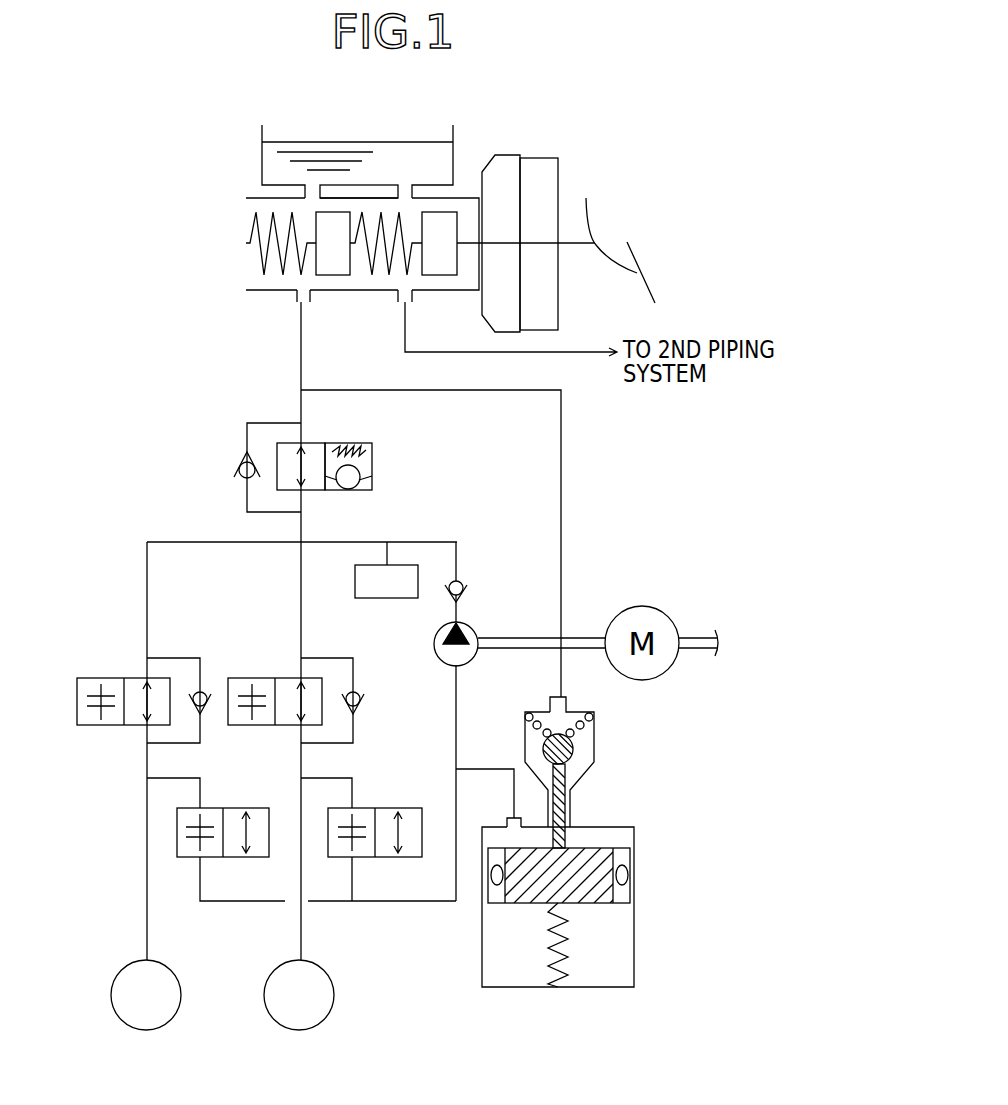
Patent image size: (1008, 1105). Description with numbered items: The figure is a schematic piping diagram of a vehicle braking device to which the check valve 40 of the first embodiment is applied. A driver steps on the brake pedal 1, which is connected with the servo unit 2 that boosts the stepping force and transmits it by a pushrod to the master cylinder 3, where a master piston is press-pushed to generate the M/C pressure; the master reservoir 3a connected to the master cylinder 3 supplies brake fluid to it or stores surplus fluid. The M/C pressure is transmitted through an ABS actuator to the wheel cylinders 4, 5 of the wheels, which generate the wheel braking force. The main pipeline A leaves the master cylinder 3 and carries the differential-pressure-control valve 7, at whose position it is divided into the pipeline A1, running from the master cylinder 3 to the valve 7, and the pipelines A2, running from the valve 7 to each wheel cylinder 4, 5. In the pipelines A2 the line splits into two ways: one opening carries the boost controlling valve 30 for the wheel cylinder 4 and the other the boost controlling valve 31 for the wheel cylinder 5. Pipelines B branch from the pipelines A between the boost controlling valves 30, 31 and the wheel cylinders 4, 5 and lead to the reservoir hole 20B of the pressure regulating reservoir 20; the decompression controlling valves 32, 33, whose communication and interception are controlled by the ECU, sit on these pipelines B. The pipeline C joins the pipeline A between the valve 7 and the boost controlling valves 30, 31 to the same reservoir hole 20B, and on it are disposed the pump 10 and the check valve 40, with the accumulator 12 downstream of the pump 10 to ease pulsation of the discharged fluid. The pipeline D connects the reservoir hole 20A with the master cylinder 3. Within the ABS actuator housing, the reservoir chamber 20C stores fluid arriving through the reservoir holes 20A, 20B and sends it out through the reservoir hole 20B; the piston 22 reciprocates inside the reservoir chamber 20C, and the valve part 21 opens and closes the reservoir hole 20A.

The brake pedal 1 is at (590, 205).
The servo unit 2 is at (540, 158).
The master cylinder 3 is at (236, 266).
The master reservoir 3a is at (348, 142).
The wheel cylinder 4 is at (111, 995).
The wheel cylinder 5 is at (264, 995).
The differential-pressure-control valve 7 is at (372, 465).
The pump 10 is at (474, 622).
The accumulator 12 is at (355, 581).
The pressure regulating reservoir 20 is at (583, 860).
The reservoir hole 20A is at (567, 693).
The reservoir hole 20B is at (507, 821).
The reservoir chamber 20C is at (597, 838).
The valve part 21 is at (587, 751).
The piston 22 is at (602, 895).
The boost controlling valve 30 is at (115, 678).
The boost controlling valve 31 is at (266, 678).
The decompression controlling valve 32 is at (257, 808).
The decompression controlling valve 33 is at (410, 808).
The check valve 40 is at (470, 586).
The pipeline A is at (292, 341).
The pipeline A1 is at (301, 407).
The pipeline A2 is at (147, 572).
The pipeline B is at (258, 901).
The pipeline C is at (418, 542).
The pipeline D is at (561, 516).